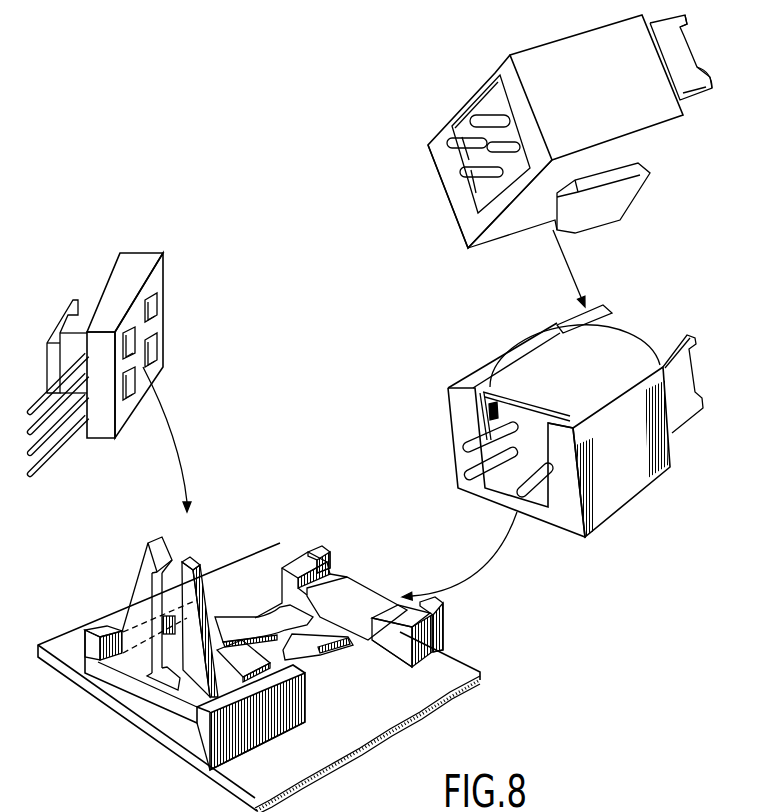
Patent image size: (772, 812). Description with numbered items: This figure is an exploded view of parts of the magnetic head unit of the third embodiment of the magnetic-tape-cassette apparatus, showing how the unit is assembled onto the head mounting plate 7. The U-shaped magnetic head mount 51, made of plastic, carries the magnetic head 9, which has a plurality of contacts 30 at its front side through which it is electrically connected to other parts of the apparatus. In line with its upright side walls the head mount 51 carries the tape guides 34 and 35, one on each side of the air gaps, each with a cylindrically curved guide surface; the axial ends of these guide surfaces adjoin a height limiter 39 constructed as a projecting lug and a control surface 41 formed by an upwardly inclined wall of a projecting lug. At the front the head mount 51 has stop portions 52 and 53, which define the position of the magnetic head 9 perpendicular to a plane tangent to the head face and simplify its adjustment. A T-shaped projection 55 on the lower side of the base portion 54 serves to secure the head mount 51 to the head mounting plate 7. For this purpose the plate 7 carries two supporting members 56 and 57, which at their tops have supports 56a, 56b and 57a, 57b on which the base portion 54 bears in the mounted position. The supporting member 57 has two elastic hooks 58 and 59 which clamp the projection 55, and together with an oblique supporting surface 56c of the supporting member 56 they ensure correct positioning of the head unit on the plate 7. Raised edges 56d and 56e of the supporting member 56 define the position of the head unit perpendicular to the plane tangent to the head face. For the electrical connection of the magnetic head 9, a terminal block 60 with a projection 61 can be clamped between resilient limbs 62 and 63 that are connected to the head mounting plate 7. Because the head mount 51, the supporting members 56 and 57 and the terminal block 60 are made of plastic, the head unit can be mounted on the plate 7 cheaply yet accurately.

The head mounting plate 7 is at (292, 772).
The magnetic head 9 is at (627, 350).
The contacts 30 is at (508, 475).
The tape guide 34 is at (612, 314).
The tape guide 35 is at (672, 53).
The height limiter 39 is at (688, 15).
The control surface 41 is at (708, 68).
The magnetic head mount 51 is at (467, 228).
The stop portion 52 is at (563, 447).
The stop portion 53 is at (487, 407).
The base portion 54 is at (512, 227).
The T-shaped projection 55 is at (608, 213).
The supporting member 56 is at (438, 633).
The support 56a is at (410, 627).
The support 56b is at (302, 560).
The oblique supporting surface 56c is at (358, 597).
The raised edge 56d is at (430, 600).
The raised edge 56e is at (323, 552).
The supporting member 57 is at (195, 747).
The support 57a is at (270, 723).
The support 57b is at (108, 628).
The elastic hook 58 is at (270, 618).
The elastic hook 59 is at (315, 640).
The terminal block 60 is at (140, 263).
The projection 61 is at (63, 318).
The resilient limb 62 is at (162, 540).
The resilient limb 63 is at (198, 560).